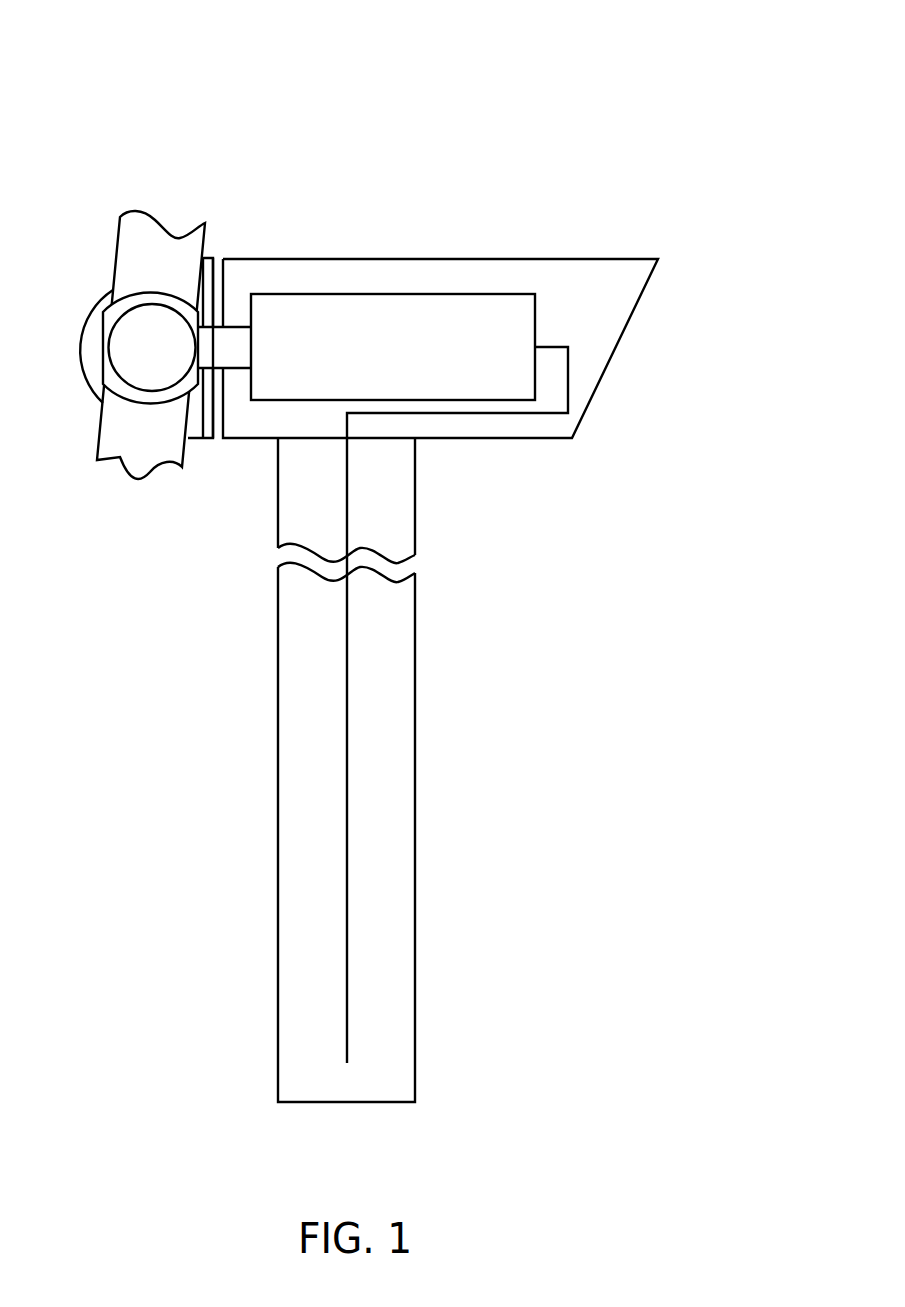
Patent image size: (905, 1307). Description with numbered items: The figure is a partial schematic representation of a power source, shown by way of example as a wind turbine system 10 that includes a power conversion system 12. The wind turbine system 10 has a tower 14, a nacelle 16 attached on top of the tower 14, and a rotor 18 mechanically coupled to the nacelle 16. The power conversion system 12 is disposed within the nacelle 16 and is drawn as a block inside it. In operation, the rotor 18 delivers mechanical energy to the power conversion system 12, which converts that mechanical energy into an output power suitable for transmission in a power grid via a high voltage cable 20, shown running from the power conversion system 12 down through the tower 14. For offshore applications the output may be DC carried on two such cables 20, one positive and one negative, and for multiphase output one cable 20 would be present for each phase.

The wind turbine system 10 is at (665, 55).
The power conversion system 12 is at (400, 360).
The tower 14 is at (415, 919).
The nacelle 16 is at (630, 258).
The rotor 18 is at (128, 262).
The high voltage cable 20 is at (348, 782).